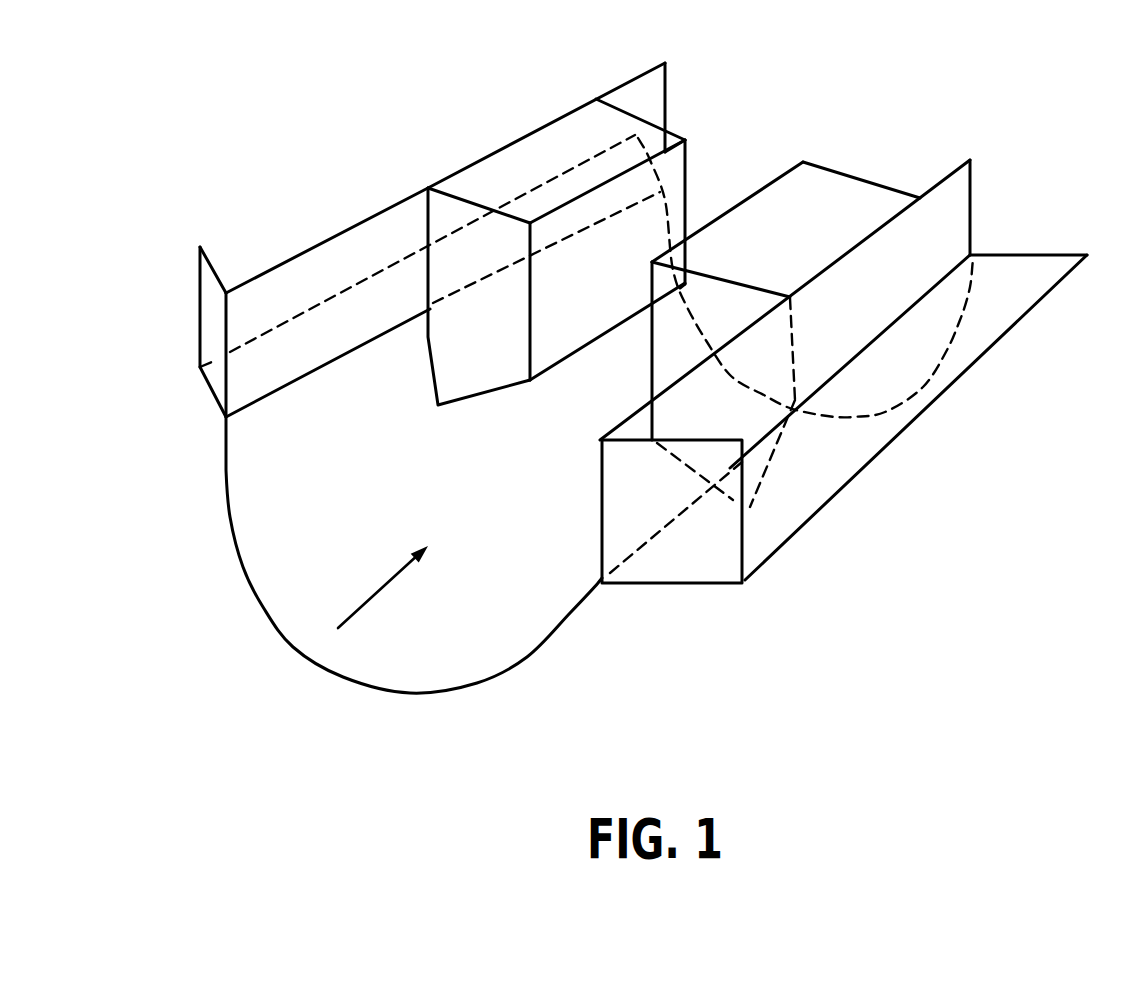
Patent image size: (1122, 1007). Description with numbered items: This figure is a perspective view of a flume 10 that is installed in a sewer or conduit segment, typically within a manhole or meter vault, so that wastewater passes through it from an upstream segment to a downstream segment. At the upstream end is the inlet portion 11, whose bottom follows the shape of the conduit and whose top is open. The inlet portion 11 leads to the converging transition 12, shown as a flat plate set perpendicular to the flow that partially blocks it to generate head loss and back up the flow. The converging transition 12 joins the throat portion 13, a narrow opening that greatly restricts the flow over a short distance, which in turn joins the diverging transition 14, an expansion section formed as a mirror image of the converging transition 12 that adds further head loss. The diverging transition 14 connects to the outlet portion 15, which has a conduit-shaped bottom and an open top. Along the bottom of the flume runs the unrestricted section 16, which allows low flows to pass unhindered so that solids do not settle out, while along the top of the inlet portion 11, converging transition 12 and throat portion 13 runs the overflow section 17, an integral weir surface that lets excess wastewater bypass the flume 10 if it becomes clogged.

The flume 10 is at (945, 511).
The inlet portion 11 is at (333, 347).
The converging transition 12 is at (498, 352).
The throat portion 13 is at (603, 287).
The diverging transition 14 is at (696, 164).
The outlet portion 15 is at (658, 115).
The unrestricted section 16 is at (478, 421).
The overflow section 17 is at (348, 222).